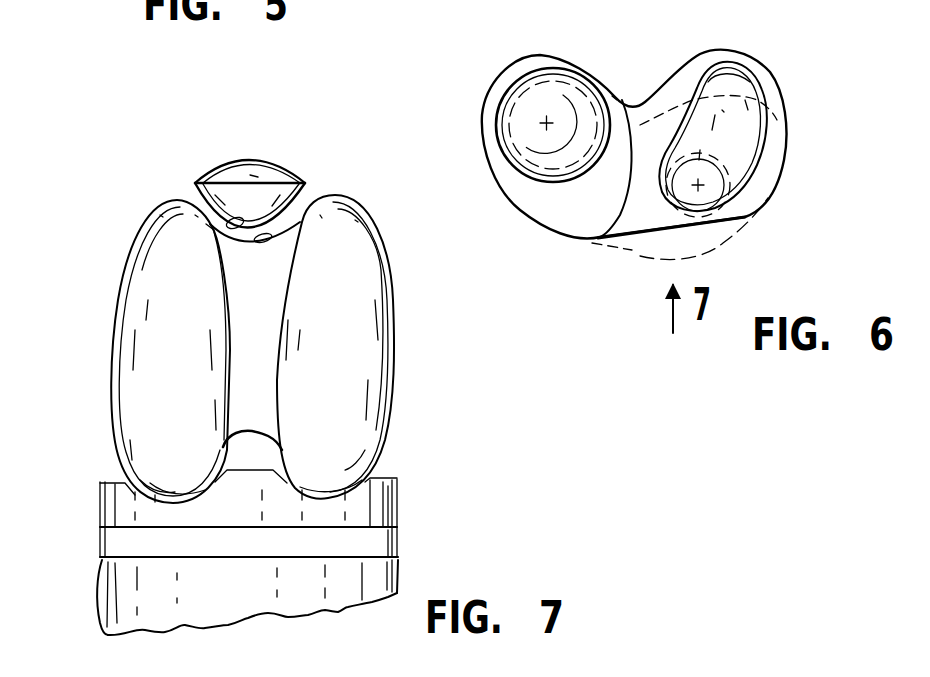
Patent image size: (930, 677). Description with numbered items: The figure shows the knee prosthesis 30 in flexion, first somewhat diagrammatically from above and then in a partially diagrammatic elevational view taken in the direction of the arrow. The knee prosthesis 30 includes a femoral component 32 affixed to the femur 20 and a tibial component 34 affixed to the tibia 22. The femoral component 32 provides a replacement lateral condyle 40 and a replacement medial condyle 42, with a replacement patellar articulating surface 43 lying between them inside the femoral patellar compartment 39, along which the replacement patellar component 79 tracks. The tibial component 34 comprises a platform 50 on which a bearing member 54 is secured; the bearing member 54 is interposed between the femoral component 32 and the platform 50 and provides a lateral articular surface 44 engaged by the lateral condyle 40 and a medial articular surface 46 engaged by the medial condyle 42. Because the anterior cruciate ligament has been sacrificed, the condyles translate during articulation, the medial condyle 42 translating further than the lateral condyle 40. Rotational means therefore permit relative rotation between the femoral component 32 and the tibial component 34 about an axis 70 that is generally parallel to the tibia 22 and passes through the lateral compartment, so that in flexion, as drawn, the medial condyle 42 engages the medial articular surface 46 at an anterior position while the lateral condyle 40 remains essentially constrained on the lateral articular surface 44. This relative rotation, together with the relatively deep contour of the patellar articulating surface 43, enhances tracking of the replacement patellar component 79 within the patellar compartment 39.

In FIG. 7, the femur 20 is at (130, 237).
In FIG. 7, the tibia 22 is at (96, 584).
In FIG. 7, the knee prosthesis 30 is at (111, 470).
In FIG. 6, the knee prosthesis 30 is at (493, 66).
In FIG. 7, the femoral component 32 is at (155, 302).
In FIG. 6, the femoral component 32 is at (757, 229).
In FIG. 7, the tibial component 34 is at (99, 526).
In FIG. 6, the tibial component 34 is at (527, 232).
In FIG. 7, the femoral patellar compartment 39 is at (210, 227).
In FIG. 7, the lateral condyle 40 is at (105, 486).
In FIG. 6, the lateral condyle 40 is at (567, 92).
In FIG. 7, the medial condyle 42 is at (395, 479).
In FIG. 6, the medial condyle 42 is at (666, 210).
In FIG. 7, the patellar articulating surface 43 is at (275, 235).
In FIG. 7, the lateral articular surface 44 is at (180, 497).
In FIG. 7, the medial articular surface 46 is at (307, 490).
In FIG. 6, the medial articular surface 46 is at (745, 153).
In FIG. 7, the platform 50 is at (400, 543).
In FIG. 7, the bearing member 54 is at (400, 512).
In FIG. 6, the axis 70 is at (543, 126).
In FIG. 7, the replacement patellar component 79 is at (220, 167).